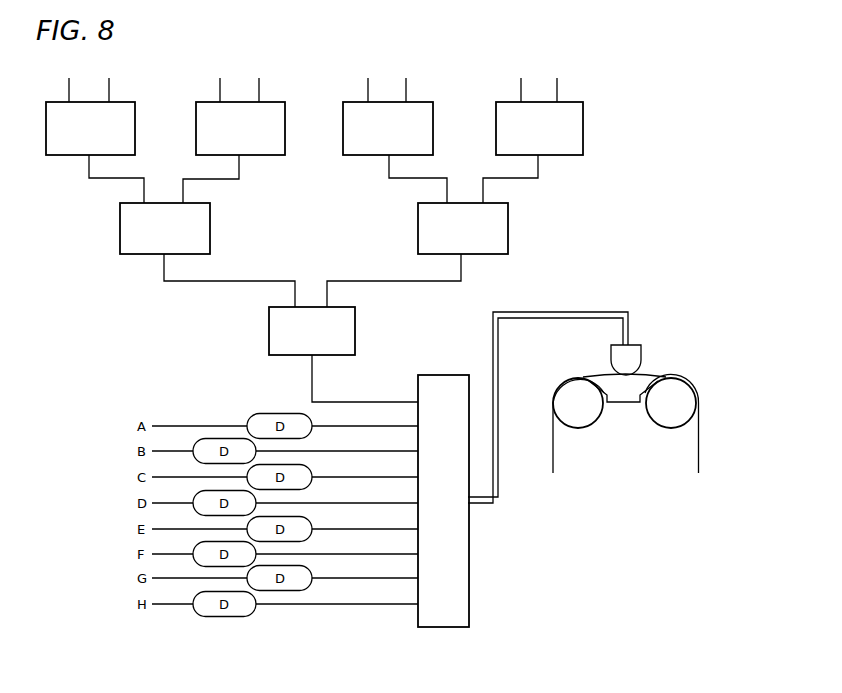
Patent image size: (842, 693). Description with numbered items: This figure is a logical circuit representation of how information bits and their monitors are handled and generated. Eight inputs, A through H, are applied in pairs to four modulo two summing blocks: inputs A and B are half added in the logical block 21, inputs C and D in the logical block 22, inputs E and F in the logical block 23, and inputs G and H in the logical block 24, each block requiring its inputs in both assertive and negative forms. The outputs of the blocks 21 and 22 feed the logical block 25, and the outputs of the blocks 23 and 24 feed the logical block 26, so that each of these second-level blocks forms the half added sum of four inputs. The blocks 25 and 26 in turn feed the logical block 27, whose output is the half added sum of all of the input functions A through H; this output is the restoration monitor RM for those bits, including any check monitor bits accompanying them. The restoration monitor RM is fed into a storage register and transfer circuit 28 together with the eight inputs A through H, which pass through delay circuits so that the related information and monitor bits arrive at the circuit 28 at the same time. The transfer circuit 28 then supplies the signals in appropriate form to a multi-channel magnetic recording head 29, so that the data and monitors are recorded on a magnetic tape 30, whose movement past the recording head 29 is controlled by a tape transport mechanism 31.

The logical block 21 is at (123, 134).
The logical block 22 is at (275, 132).
The logical block 23 is at (423, 130).
The logical block 24 is at (577, 127).
The logical block 25 is at (198, 234).
The logical block 26 is at (493, 236).
The logical block 27 is at (343, 327).
The storage register and transfer circuit 28 is at (441, 388).
The multi-channel magnetic recording head 29 is at (632, 362).
The magnetic tape 30 is at (553, 443).
The tape transport mechanism 31 is at (628, 407).